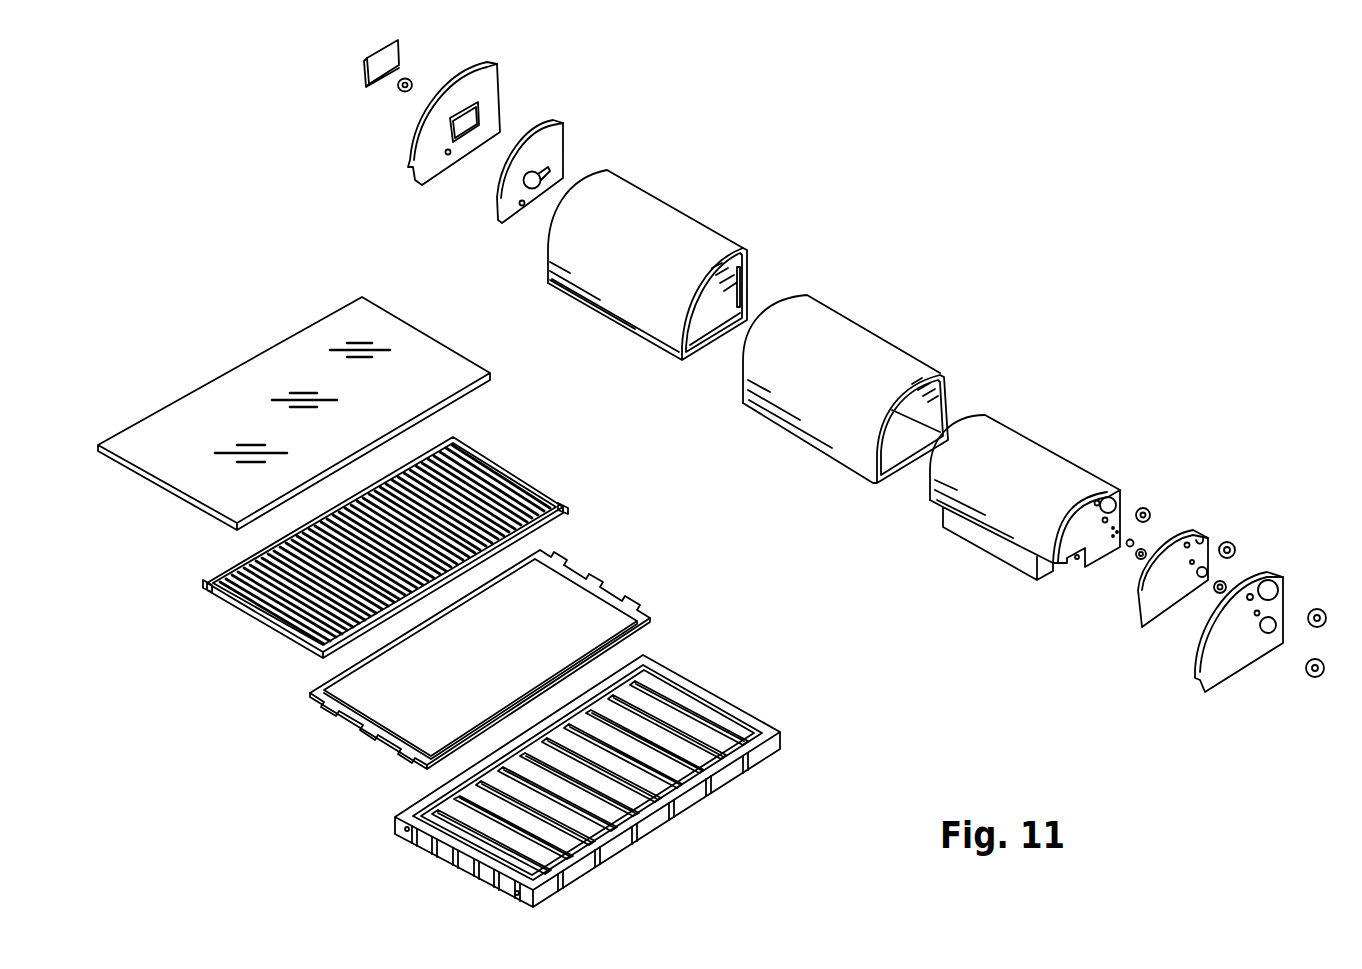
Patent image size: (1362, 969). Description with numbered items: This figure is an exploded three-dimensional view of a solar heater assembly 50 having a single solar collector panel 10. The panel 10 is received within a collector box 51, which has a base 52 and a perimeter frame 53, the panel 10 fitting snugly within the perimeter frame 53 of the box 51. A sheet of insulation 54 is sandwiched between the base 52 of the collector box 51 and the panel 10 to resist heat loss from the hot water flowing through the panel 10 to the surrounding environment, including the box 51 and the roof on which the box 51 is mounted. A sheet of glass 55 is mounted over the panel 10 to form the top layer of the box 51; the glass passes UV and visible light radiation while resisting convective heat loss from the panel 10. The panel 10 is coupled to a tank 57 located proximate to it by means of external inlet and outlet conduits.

The panel 10 is at (530, 449).
The solar heater assembly 50 is at (896, 251).
The collector box 51 is at (612, 769).
The base 52 is at (441, 870).
The perimeter frame 53 is at (738, 764).
The sheet of insulation 54 is at (573, 597).
The sheet of glass 55 is at (300, 352).
The tank 57 is at (935, 485).